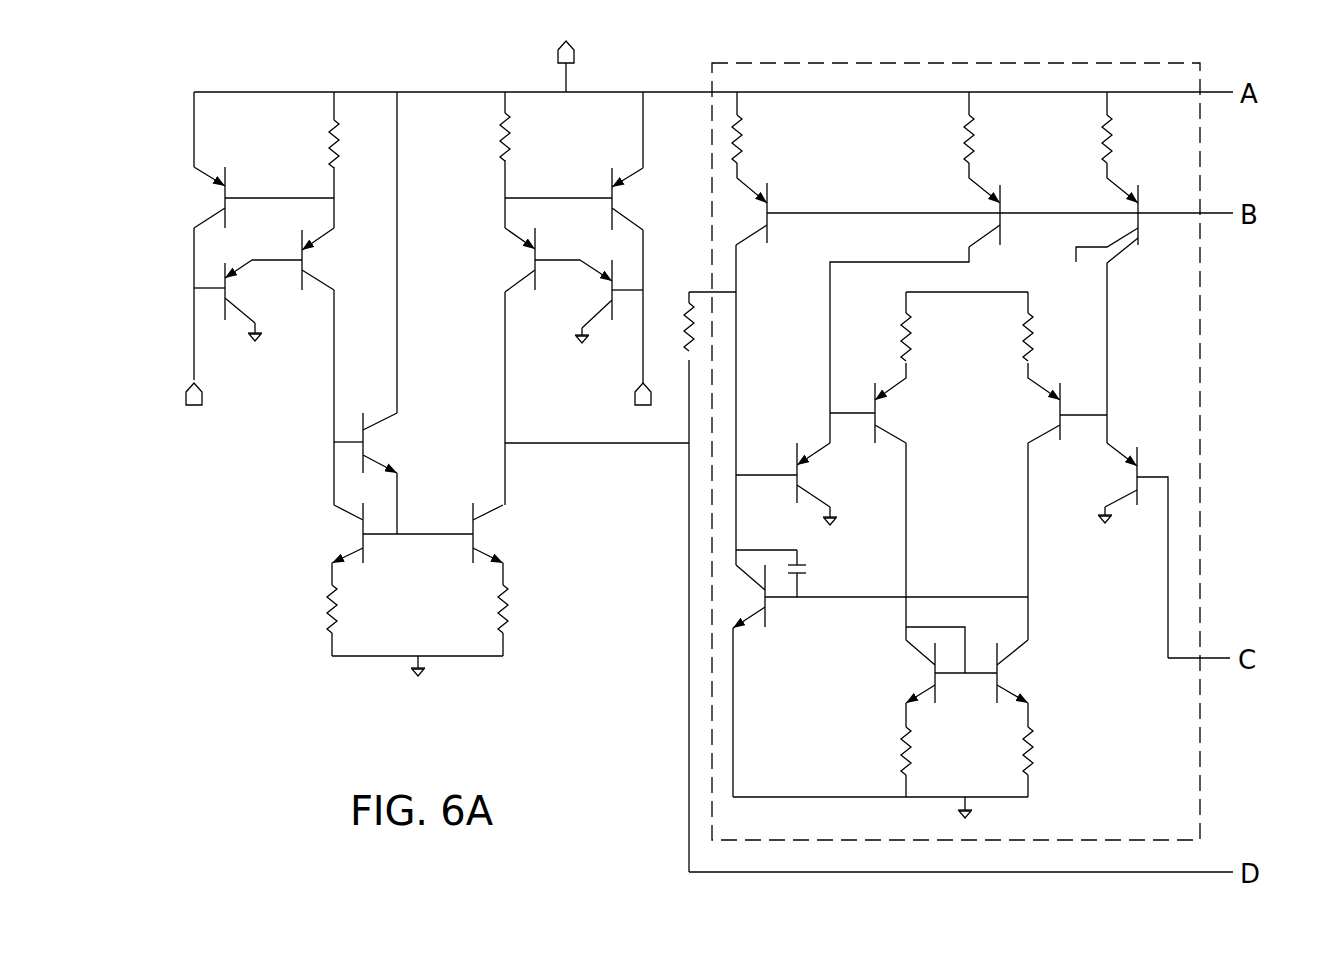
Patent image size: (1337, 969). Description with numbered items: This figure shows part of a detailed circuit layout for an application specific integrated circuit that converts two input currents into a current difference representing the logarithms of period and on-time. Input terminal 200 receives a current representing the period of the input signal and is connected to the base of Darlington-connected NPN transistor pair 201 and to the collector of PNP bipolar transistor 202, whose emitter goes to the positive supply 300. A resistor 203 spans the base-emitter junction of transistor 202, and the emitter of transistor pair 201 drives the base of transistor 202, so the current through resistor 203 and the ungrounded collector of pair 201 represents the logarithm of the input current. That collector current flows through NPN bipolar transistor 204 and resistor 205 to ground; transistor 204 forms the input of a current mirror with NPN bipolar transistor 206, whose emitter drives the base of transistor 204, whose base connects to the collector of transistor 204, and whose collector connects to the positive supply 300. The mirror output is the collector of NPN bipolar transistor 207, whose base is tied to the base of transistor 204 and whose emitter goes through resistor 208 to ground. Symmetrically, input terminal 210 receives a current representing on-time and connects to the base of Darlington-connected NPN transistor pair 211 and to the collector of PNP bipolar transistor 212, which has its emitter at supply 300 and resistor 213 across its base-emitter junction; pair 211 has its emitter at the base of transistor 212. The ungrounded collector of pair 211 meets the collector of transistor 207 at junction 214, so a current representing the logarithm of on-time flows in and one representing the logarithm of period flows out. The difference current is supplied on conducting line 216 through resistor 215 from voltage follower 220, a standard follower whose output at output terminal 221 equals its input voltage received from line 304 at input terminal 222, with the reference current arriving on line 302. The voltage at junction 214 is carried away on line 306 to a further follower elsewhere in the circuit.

The input terminal 200 is at (212, 395).
The Darlington-connected NPN transistor pair 201 is at (270, 267).
The PNP bipolar transistor 202 is at (232, 190).
The resistor 203 is at (327, 145).
The NPN bipolar transistor 204 is at (355, 533).
The resistor 205 is at (325, 602).
The NPN bipolar transistor 206 is at (372, 442).
The NPN bipolar transistor 207 is at (483, 532).
The resistor 208 is at (512, 602).
The input terminal 210 is at (622, 393).
The Darlington-connected NPN transistor pair 211 is at (558, 268).
The PNP bipolar transistor 212 is at (608, 192).
The resistor 213 is at (497, 137).
The junction 214 is at (500, 446).
The resistor 215 is at (685, 340).
The conducting line 216 is at (688, 413).
The voltage follower 220 is at (1210, 388).
The output terminal 221 is at (743, 292).
The input terminal 222 is at (1165, 620).
The positive supply 300 is at (552, 47).
The line 302 is at (907, 213).
The line 304 is at (1212, 657).
The line 306 is at (685, 750).